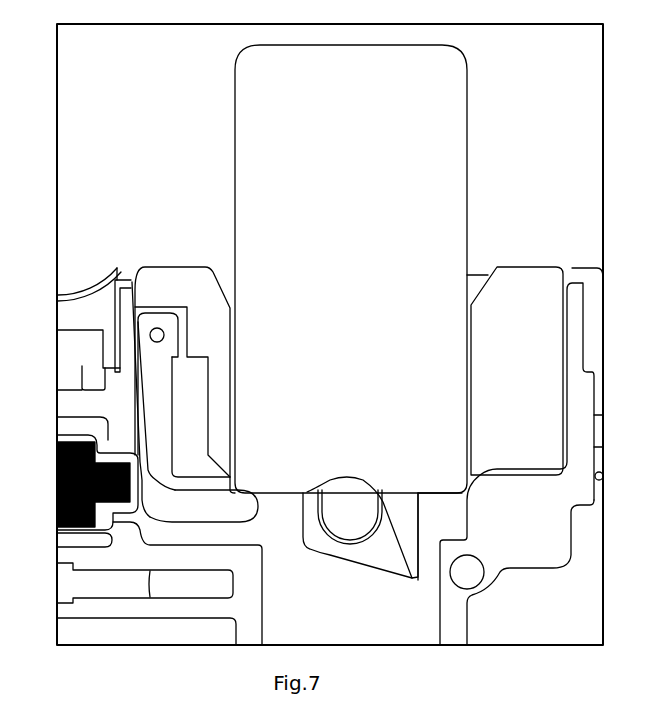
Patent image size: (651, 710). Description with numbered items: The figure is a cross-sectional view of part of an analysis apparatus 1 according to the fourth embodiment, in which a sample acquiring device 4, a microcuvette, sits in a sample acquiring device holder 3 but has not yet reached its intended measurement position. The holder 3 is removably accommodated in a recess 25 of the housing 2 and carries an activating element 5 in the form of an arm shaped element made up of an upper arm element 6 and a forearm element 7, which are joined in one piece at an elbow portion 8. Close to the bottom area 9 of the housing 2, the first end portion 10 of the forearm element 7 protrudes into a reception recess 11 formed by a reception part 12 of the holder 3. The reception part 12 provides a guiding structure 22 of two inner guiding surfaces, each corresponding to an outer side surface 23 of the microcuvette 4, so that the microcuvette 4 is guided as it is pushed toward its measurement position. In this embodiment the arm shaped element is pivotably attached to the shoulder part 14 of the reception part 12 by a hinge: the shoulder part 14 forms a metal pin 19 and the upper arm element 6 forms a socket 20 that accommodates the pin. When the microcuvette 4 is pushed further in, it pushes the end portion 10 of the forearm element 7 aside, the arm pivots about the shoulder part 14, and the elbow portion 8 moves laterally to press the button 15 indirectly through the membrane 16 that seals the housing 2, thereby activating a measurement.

The analysis apparatus 1 is at (138, 146).
The housing 2 is at (541, 548).
The sample acquiring device holder 3 is at (508, 270).
The sample acquiring device 4 is at (445, 115).
The activating element 5 is at (176, 390).
The upper arm element 6 is at (157, 443).
The forearm element 7 is at (238, 510).
The elbow portion 8 is at (155, 490).
The bottom area 9 is at (418, 613).
The first end portion 10 is at (266, 526).
The reception recess 11 is at (278, 505).
The reception part 12 is at (510, 287).
The shoulder part 14 is at (168, 280).
The button 15 is at (57, 490).
The membrane 16 is at (72, 540).
The metal pin 19 is at (146, 420).
The socket 20 is at (155, 328).
The guiding structure 22 is at (240, 353).
The outer side surface 23 is at (234, 135).
The recess 25 is at (135, 385).